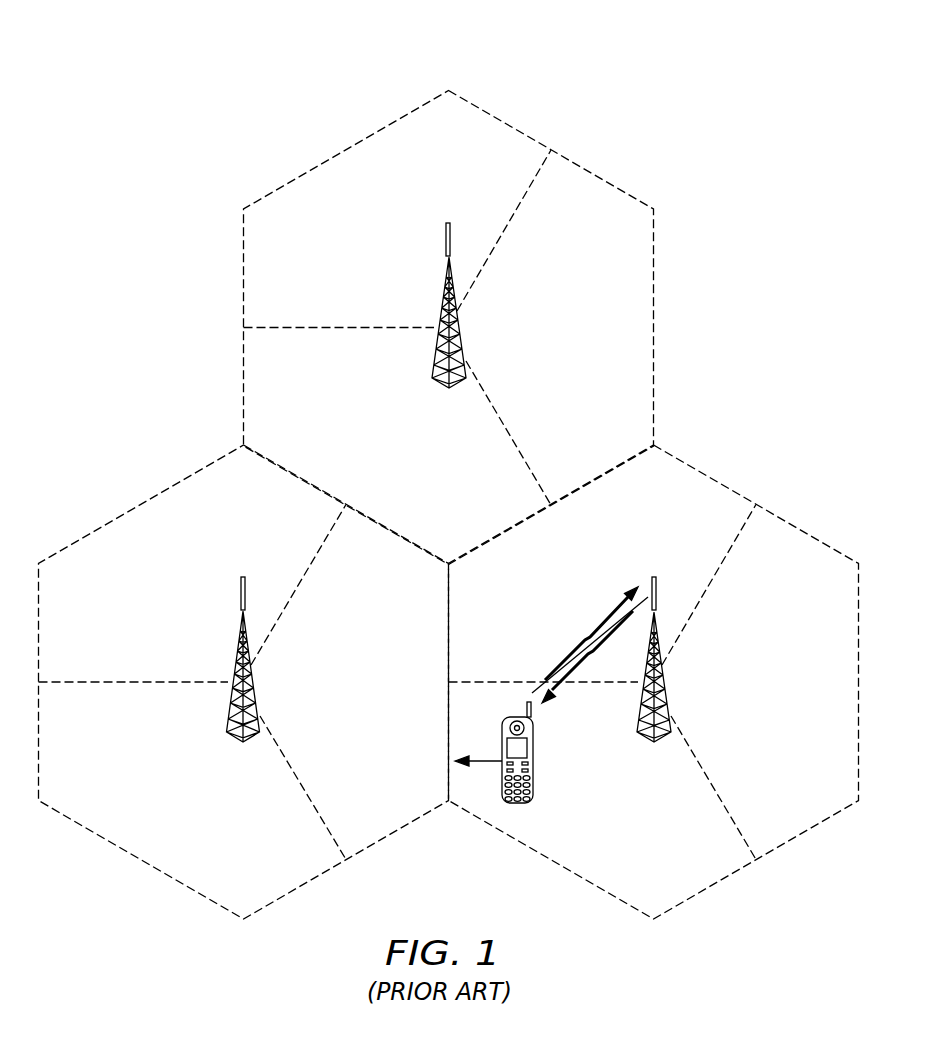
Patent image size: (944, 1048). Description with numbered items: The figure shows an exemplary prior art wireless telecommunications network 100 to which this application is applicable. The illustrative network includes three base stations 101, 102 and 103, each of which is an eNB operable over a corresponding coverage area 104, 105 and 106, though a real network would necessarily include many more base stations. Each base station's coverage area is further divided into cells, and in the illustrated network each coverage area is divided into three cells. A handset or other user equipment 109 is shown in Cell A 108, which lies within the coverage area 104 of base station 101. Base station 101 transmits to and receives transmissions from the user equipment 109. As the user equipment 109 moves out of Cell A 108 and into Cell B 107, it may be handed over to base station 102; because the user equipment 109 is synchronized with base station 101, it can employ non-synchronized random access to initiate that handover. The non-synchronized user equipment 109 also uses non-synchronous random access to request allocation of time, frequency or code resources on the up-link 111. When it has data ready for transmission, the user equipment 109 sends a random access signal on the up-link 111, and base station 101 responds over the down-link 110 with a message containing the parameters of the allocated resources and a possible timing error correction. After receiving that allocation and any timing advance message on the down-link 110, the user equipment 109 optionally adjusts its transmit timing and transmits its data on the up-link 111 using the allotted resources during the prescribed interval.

The wireless telecommunications network 100 is at (449, 468).
The base station 101 is at (664, 695).
The base station 102 is at (241, 640).
The base station 103 is at (447, 283).
The coverage area 104 is at (790, 841).
The coverage area 105 is at (134, 858).
The coverage area 106 is at (654, 322).
The Cell B 107 is at (400, 799).
The Cell A 108 is at (660, 869).
The user equipment 109 is at (534, 769).
The down-link 110 is at (572, 676).
The up-link 111 is at (601, 616).